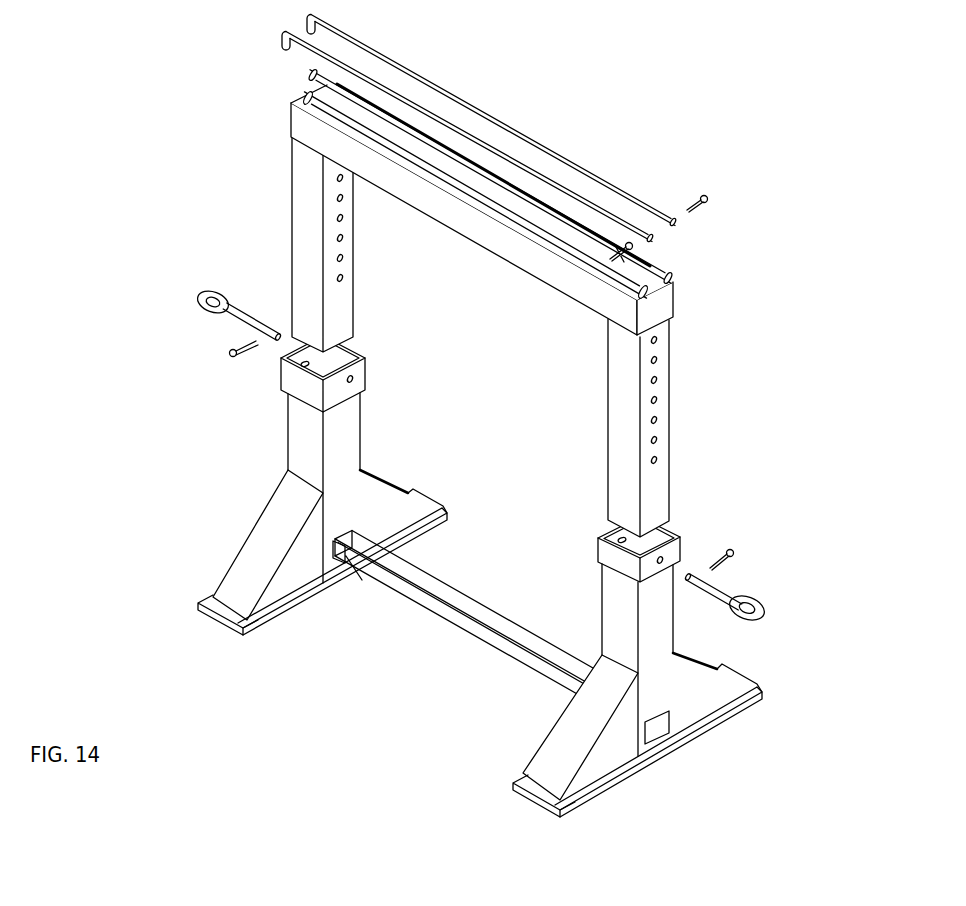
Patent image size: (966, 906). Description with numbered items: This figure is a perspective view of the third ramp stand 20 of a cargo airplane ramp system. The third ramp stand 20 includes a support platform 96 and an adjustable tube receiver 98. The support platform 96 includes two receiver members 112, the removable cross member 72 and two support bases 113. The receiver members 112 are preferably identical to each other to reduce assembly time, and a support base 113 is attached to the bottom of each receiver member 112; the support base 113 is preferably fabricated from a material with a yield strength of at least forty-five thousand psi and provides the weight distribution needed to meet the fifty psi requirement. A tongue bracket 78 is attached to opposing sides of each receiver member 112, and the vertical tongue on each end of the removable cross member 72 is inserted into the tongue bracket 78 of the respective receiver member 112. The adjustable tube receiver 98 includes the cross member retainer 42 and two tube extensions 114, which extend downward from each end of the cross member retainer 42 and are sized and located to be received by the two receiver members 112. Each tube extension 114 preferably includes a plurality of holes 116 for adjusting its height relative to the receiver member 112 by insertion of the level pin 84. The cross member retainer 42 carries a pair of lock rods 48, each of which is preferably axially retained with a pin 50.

The third ramp stand 20 is at (535, 416).
The cross member retainer 42 is at (497, 254).
The lock rod 48 is at (521, 122).
The pin 50 is at (708, 197).
The removable cross member 72 is at (510, 654).
The tongue bracket 78 is at (340, 565).
The level pin 84 is at (213, 298).
The support platform 96 is at (500, 526).
The adjustable tube receiver 98 is at (520, 293).
The receiver member 112 is at (362, 419).
The support base 113 is at (762, 693).
The tube extension 114 is at (292, 192).
The holes 116 is at (345, 283).